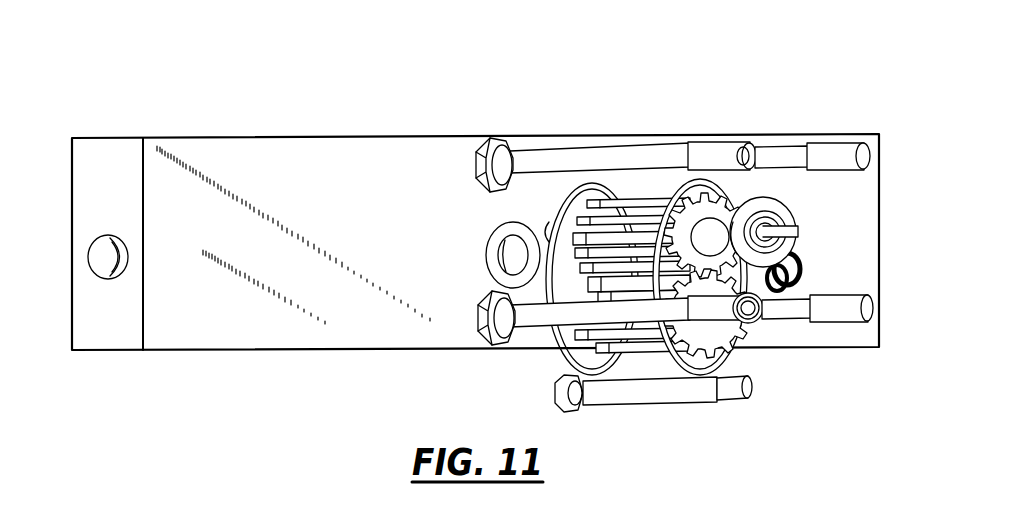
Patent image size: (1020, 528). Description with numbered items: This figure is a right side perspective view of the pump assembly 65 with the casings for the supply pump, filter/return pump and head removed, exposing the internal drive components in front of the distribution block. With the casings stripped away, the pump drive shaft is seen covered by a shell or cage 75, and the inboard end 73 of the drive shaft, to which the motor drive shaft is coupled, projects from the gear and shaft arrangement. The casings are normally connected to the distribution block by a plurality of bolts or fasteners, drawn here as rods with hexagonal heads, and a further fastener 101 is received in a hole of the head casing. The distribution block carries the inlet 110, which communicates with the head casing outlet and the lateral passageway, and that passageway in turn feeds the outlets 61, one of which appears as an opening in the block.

The pump assembly 65 is at (554, 94).
The outlets 61 is at (88, 283).
The inlet 110 is at (513, 260).
The cage 75 is at (705, 202).
The inboard end 73 is at (798, 233).
The fastener 101 is at (647, 390).